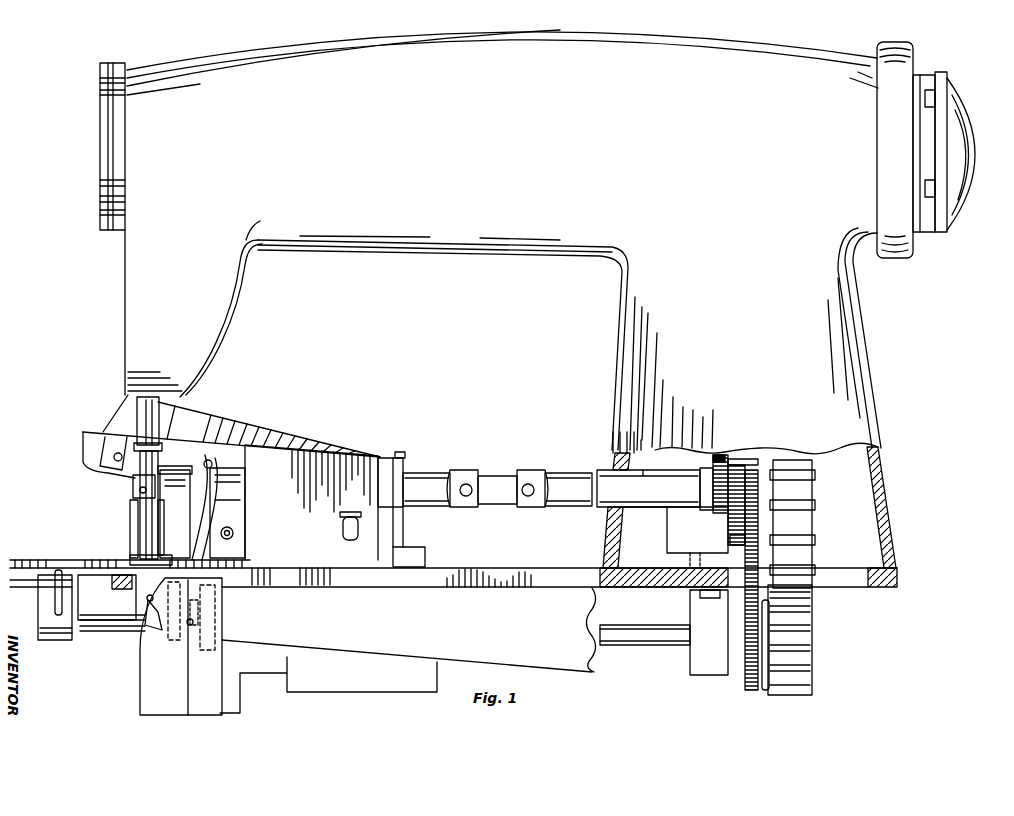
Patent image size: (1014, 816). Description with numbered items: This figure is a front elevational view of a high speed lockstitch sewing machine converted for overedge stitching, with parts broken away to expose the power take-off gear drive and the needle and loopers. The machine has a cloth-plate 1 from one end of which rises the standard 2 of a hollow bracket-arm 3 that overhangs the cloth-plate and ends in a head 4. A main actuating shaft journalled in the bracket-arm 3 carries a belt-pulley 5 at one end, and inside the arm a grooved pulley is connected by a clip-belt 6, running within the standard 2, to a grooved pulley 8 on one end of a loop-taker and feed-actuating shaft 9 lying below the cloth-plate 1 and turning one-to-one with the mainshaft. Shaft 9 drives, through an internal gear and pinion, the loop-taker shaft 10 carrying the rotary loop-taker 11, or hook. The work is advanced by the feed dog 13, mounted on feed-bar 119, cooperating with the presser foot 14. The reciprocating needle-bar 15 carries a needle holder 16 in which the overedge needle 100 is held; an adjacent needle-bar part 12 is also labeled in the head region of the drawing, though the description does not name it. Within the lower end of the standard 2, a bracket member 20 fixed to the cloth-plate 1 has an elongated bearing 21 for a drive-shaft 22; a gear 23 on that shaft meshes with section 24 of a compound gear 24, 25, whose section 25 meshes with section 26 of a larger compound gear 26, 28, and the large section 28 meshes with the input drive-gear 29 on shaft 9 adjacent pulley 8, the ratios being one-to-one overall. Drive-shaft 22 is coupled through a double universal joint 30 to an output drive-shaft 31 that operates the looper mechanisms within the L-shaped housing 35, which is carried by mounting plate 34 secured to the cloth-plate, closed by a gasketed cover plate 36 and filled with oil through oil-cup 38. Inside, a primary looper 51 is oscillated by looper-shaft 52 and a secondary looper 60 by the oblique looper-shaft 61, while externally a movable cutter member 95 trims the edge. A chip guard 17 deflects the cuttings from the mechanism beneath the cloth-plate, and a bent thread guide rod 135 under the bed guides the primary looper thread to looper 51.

The cloth-plate 1 is at (430, 580).
The standard 2 is at (872, 382).
The bracket-arm 3 is at (425, 230).
The head 4 is at (140, 298).
The belt-pulley 5 is at (972, 150).
The clip-belt 6 is at (800, 494).
The grooved pulley 8 is at (813, 635).
The loop-taker and feed-actuating shaft 9 is at (640, 645).
The loop-taker shaft 10 is at (202, 623).
The rotary loop-taker 11 is at (143, 634).
The needle bar 12 is at (146, 527).
The feed dog 13 is at (114, 582).
The presser foot 14 is at (134, 517).
The needle-bar 15 is at (162, 457).
The needle holder 16 is at (136, 483).
The chip guard 17 is at (148, 692).
The bracket member 20 is at (668, 547).
The elongated bearing 21 is at (633, 470).
The drive-shaft 22 is at (645, 499).
The gear 23 is at (713, 514).
The compound gear section 24 is at (724, 458).
The compound gear section 25 is at (745, 462).
The compound gear section 26 is at (733, 538).
The gear section 28 is at (745, 517).
The input drive-gear 29 is at (752, 690).
The double universal joint 30 is at (502, 477).
The output drive-shaft 31 is at (398, 483).
The mounting plate 34 is at (320, 568).
The housing 35 is at (291, 548).
The cover plate 36 is at (280, 440).
The oil-cup 38 is at (343, 536).
The primary looper 51 is at (244, 534).
The looper-shaft 52 is at (114, 457).
The secondary looper 60 is at (244, 518).
The looper-shaft 61 is at (244, 459).
The movable cutter member 95 is at (244, 491).
The overedge needle 100 is at (158, 538).
The feed-bar 119 is at (111, 603).
The bent thread guide rod 135 is at (50, 593).